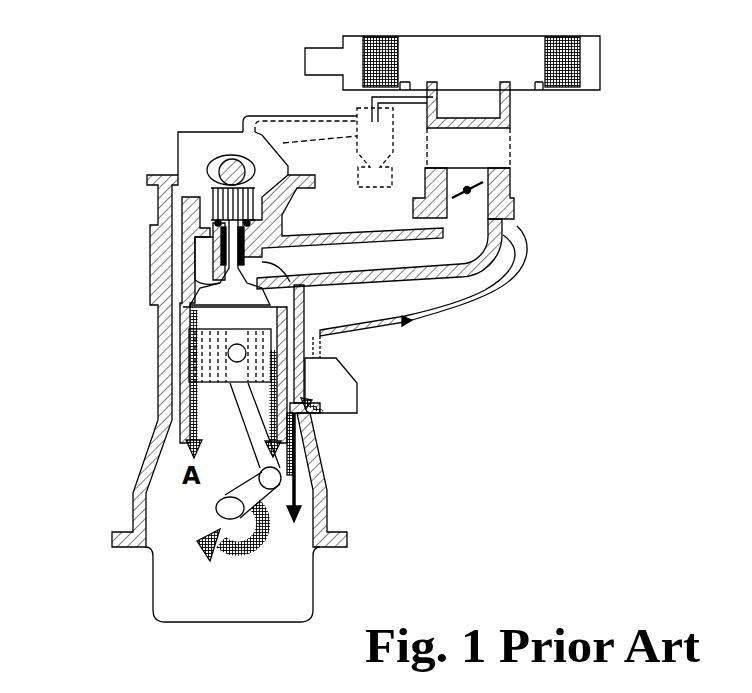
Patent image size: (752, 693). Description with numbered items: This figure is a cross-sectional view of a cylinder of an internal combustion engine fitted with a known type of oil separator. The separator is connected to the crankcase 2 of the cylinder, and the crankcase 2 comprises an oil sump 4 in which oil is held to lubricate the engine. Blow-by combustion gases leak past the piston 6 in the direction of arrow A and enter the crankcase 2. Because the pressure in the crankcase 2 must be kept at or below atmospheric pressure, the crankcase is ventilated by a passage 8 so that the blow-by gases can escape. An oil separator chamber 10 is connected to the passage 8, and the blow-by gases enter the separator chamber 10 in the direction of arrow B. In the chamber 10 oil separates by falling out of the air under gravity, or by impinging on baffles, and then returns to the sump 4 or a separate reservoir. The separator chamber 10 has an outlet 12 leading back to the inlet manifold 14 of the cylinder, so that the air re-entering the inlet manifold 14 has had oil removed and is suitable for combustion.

The crankcase 2 is at (153, 591).
The oil sump 4 is at (252, 608).
The piston 6 is at (212, 352).
The passage 8 is at (306, 406).
The oil separator chamber 10 is at (348, 373).
The outlet 12 is at (500, 285).
The inlet manifold 14 is at (378, 258).